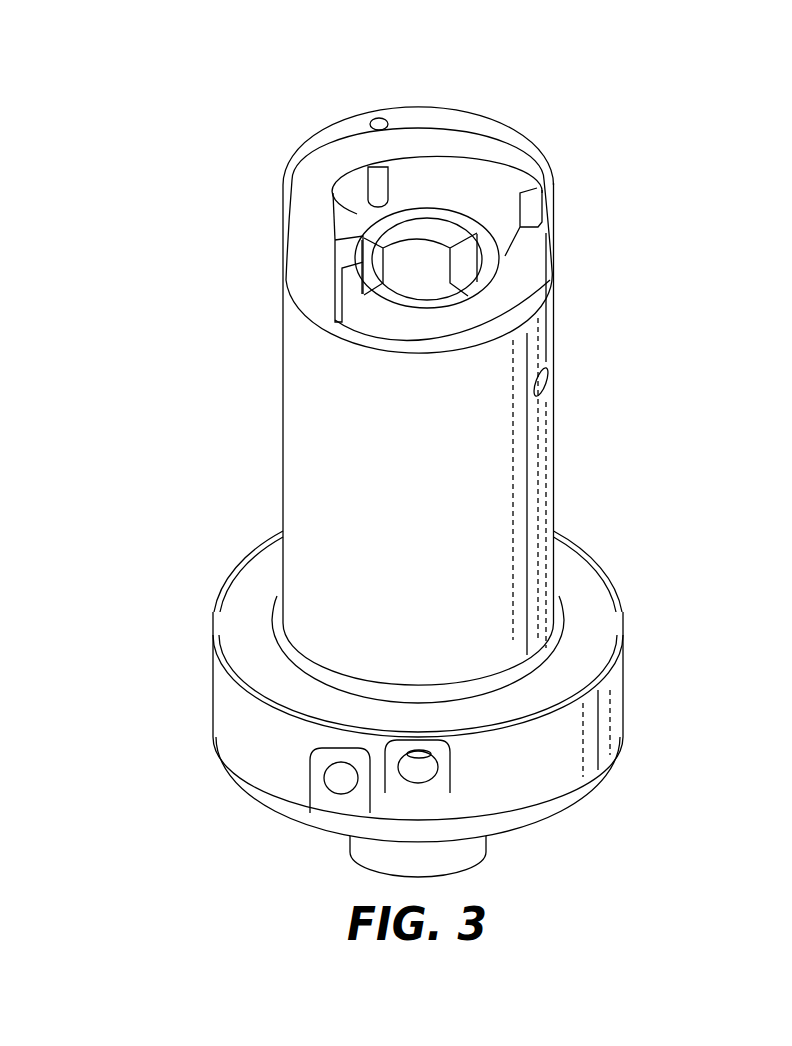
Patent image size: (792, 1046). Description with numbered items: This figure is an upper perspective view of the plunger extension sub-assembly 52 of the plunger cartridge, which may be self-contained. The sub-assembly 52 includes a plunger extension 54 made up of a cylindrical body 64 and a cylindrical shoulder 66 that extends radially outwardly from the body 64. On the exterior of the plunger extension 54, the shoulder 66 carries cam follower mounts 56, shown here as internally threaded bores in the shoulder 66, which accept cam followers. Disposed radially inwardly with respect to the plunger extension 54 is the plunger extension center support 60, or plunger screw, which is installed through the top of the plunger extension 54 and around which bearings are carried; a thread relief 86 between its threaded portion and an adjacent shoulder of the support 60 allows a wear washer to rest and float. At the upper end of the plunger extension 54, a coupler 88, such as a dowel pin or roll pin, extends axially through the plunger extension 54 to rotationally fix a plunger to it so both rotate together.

The plunger extension sub-assembly 52 is at (222, 128).
The plunger extension 54 is at (270, 527).
The cam follower mounts 56 is at (413, 768).
The plunger extension center support 60 is at (455, 215).
The body 64 is at (297, 340).
The shoulder 66 is at (228, 688).
The thread relief 86 is at (507, 253).
The coupler 88 is at (380, 177).